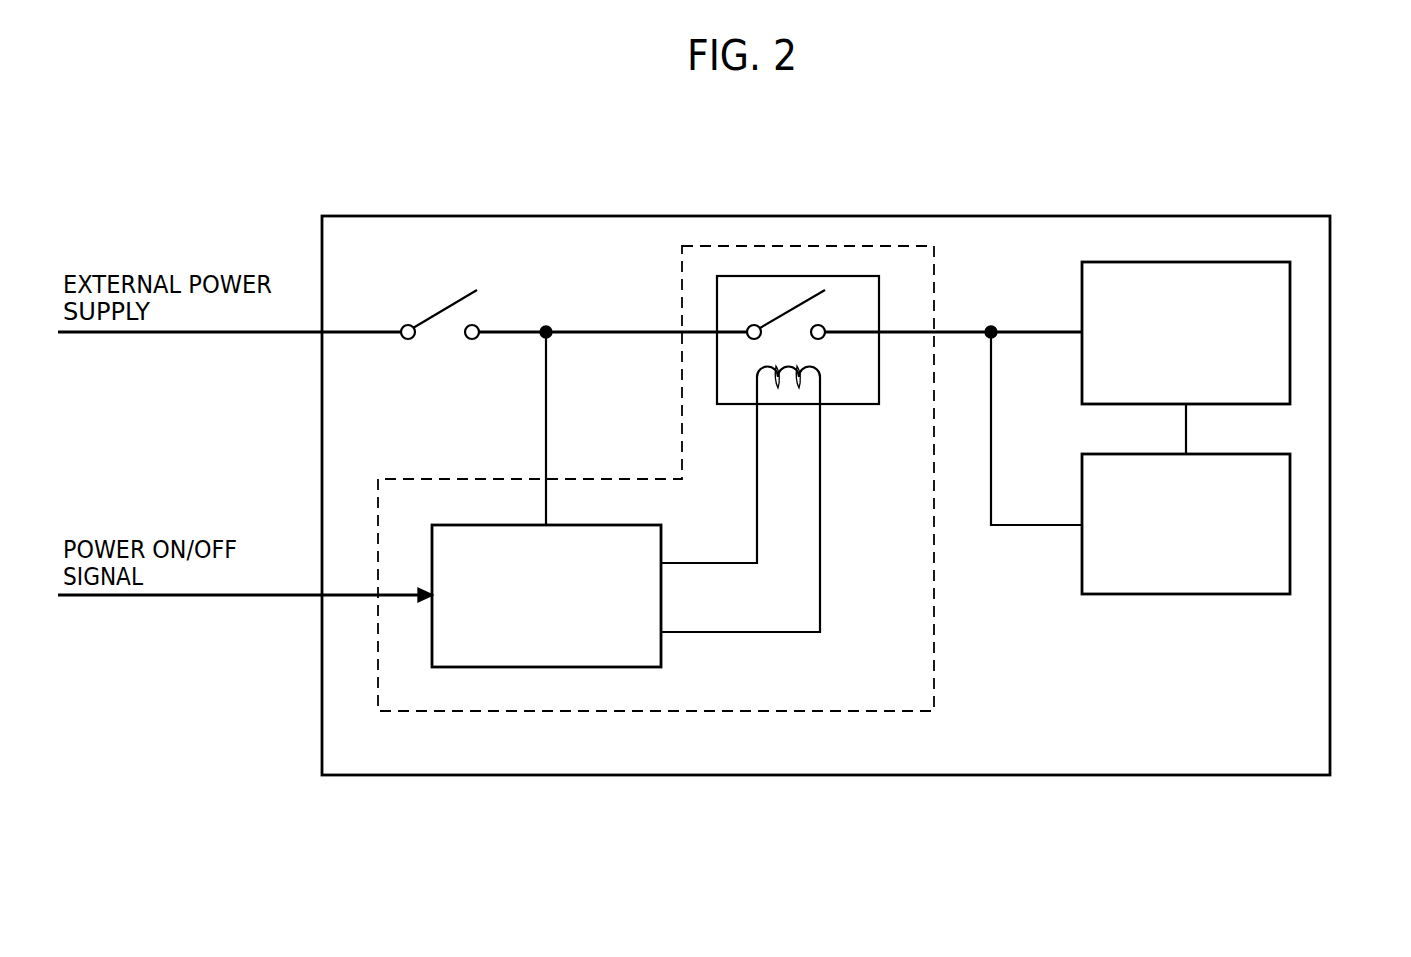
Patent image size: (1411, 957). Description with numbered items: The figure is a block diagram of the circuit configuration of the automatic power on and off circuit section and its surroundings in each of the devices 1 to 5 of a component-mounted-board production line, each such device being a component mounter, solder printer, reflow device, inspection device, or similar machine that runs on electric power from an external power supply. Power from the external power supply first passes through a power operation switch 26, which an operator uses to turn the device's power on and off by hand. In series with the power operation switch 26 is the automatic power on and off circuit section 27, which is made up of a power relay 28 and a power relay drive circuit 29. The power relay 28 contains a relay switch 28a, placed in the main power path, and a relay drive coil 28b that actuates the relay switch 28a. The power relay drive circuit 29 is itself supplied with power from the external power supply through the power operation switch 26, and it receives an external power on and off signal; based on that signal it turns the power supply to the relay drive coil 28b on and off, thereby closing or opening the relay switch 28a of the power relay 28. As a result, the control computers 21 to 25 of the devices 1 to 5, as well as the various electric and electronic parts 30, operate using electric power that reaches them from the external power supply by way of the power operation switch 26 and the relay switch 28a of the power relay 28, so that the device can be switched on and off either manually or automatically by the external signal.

The devices 1 to 5 is at (612, 216).
The power operation switch 26 is at (448, 305).
The automatic power on and off circuit section 27 is at (490, 712).
The power relay 28 is at (827, 310).
The relay switch 28a is at (797, 306).
The relay drive coil 28b is at (820, 372).
The power relay drive circuit 29 is at (610, 668).
The control computers 21 to 25 is at (1183, 262).
The various electric and electronic parts 30 is at (1290, 523).